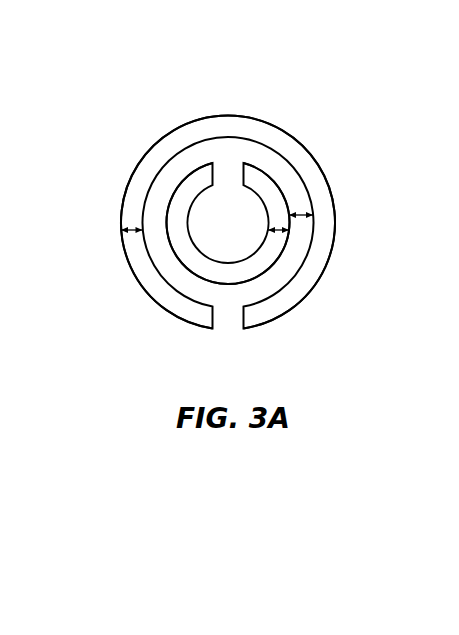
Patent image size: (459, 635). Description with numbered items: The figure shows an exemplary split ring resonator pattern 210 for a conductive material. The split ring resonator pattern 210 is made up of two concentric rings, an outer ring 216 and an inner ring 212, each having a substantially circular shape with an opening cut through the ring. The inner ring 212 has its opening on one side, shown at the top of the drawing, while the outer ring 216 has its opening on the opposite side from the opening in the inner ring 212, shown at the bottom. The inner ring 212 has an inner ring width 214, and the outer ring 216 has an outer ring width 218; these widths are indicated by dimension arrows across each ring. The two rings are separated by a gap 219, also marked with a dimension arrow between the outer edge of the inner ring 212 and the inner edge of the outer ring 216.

The split ring resonator pattern 210 is at (132, 64).
The inner ring 212 is at (263, 268).
The inner ring width 214 is at (285, 238).
The outer ring 216 is at (120, 200).
The outer ring width 218 is at (122, 235).
The gap 219 is at (297, 215).